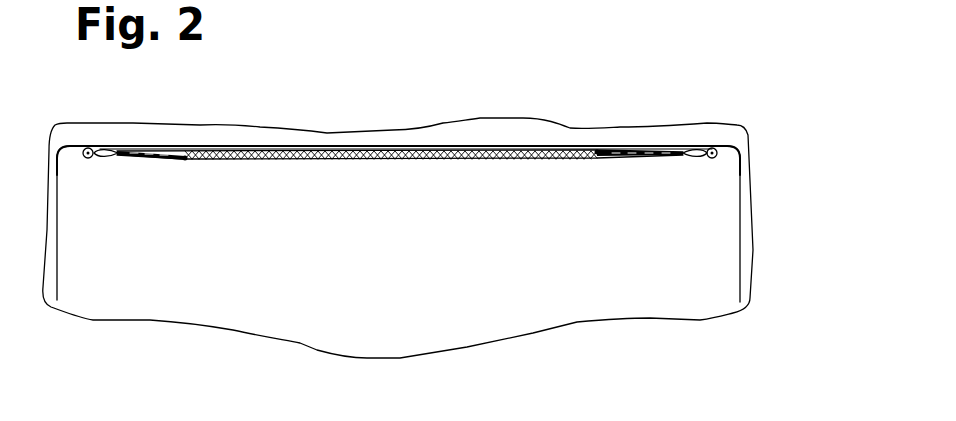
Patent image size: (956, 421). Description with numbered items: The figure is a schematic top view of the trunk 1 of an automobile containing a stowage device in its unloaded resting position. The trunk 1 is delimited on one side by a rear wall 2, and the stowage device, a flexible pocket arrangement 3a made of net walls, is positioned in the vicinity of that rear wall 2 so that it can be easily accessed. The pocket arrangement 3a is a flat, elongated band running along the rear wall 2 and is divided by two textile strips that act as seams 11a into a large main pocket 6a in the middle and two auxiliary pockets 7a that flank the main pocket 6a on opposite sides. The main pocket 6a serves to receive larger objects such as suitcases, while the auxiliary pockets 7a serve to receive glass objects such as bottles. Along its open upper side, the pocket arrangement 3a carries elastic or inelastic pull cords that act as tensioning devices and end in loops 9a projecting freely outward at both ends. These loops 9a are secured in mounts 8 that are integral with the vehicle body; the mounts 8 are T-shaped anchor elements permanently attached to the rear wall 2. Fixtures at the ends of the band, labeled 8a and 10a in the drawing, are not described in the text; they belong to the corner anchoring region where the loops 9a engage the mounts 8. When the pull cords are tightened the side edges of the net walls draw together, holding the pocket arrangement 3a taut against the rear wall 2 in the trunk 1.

The trunk 1 is at (650, 275).
The rear wall 2 is at (430, 138).
The pocket arrangement 3a is at (403, 167).
The main pocket 6a is at (496, 157).
The auxiliary pockets 7a is at (144, 152).
The mounts 8 is at (715, 147).
The frame left corner 8a is at (82, 146).
The loops 9a is at (89, 159).
The hook fastener 10a is at (101, 158).
The seams 11a is at (186, 161).